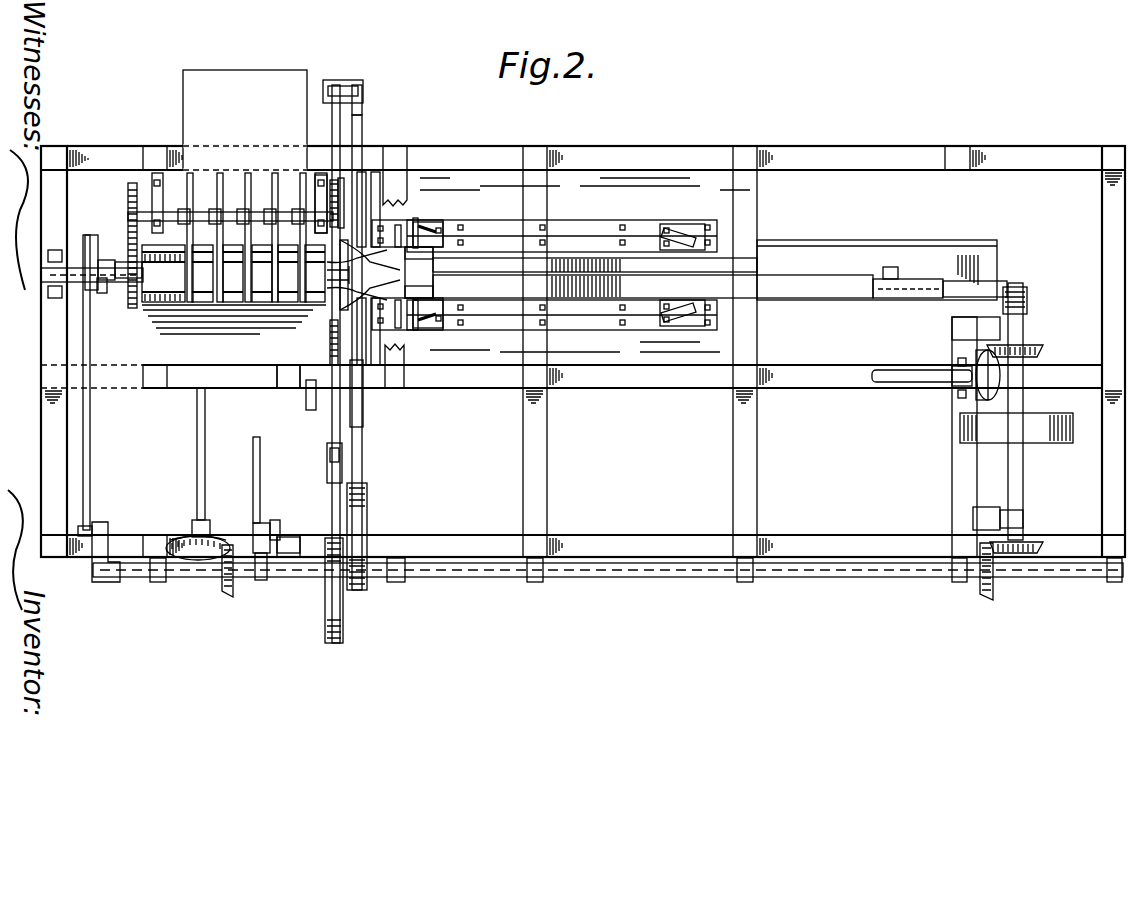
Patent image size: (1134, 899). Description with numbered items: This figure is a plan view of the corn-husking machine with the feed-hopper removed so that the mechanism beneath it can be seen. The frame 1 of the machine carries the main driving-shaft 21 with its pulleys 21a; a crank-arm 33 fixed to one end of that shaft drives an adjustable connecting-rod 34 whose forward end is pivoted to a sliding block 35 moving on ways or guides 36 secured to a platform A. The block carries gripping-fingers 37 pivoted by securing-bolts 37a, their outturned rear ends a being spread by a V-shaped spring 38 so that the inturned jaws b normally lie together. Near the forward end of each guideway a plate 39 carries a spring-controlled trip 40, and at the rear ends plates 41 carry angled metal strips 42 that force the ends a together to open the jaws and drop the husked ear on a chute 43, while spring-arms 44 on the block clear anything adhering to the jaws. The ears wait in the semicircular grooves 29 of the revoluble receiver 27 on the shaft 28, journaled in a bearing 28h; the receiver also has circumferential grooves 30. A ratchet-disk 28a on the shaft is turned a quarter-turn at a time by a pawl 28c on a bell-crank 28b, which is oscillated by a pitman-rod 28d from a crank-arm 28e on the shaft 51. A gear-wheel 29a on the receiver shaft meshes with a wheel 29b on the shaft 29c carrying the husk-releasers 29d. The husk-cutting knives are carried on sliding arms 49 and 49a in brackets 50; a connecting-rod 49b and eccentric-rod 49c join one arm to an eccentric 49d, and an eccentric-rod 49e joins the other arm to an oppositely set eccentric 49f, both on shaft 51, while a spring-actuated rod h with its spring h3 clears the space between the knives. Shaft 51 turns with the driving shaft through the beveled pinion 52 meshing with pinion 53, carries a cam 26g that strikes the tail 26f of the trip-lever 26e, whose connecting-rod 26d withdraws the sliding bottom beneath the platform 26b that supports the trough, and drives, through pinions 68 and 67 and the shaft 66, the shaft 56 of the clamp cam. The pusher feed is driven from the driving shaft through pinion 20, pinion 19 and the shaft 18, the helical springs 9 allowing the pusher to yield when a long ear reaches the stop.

The frame 1 is at (828, 150).
The helical springs 9 is at (327, 174).
The shaft 18 is at (908, 380).
The bevel-pinion 19 is at (1002, 382).
The pinion 20 is at (1038, 352).
The main driving-shaft 21 is at (1024, 468).
The pulleys 21a is at (978, 430).
The platform 26b is at (263, 374).
The connecting-rod 26d is at (254, 474).
The trip-lever 26e is at (284, 540).
The tail 26f is at (248, 550).
The cam 26g is at (256, 575).
The revoluble receiver 27 is at (300, 332).
The shaft 28 is at (318, 296).
The ratchet-disk 28a is at (106, 262).
The bell-crank lever 28b is at (93, 242).
The pawl 28c is at (102, 294).
The pitman-rod 28d is at (91, 427).
The crank-arm 28e is at (104, 530).
The bearing 28h is at (44, 274).
The semicircular grooves 29 is at (220, 273).
The gear-wheel 29a is at (136, 312).
The gear-wheel 29b is at (128, 188).
The shaft 29c is at (186, 214).
The husk-releasers 29d is at (220, 178).
The circumferential grooves 30 is at (190, 306).
The crank-arm 33 is at (906, 296).
The connecting-rod 34 is at (798, 290).
The sliding block 35 is at (420, 272).
The ways or guides 36 is at (562, 275).
The gripping-fingers 37 is at (380, 272).
The securing-bolt 37a is at (418, 272).
The V-shaped spring 38 is at (450, 256).
The plate 39 is at (438, 236).
The spring-controlled trip 40 is at (416, 226).
The plate 41 is at (680, 232).
The metal strip 42 is at (690, 232).
The chute 43 is at (914, 258).
The spring-arms 44 is at (346, 246).
The sliding arm 49 is at (332, 436).
The sliding arm 49a is at (342, 130).
The connecting-rod 49b is at (360, 104).
The eccentric-rod 49c is at (363, 462).
The eccentric 49d is at (368, 520).
The eccentric-rod 49e is at (328, 502).
The eccentric 49f is at (326, 612).
The brackets 50 is at (374, 184).
The shaft 51 is at (796, 580).
The beveled pinion 52 is at (992, 592).
The pinion 53 is at (1018, 560).
The shaft 56 is at (330, 382).
The shaft 66 is at (198, 442).
The beveled pinion 67 is at (186, 540).
The pinion 68 is at (224, 590).
The platform A is at (585, 265).
The rear ends of gripping-fingers a is at (406, 256).
The jaws b is at (378, 266).
The spring-actuated rod h is at (338, 204).
The spring h3 is at (330, 204).